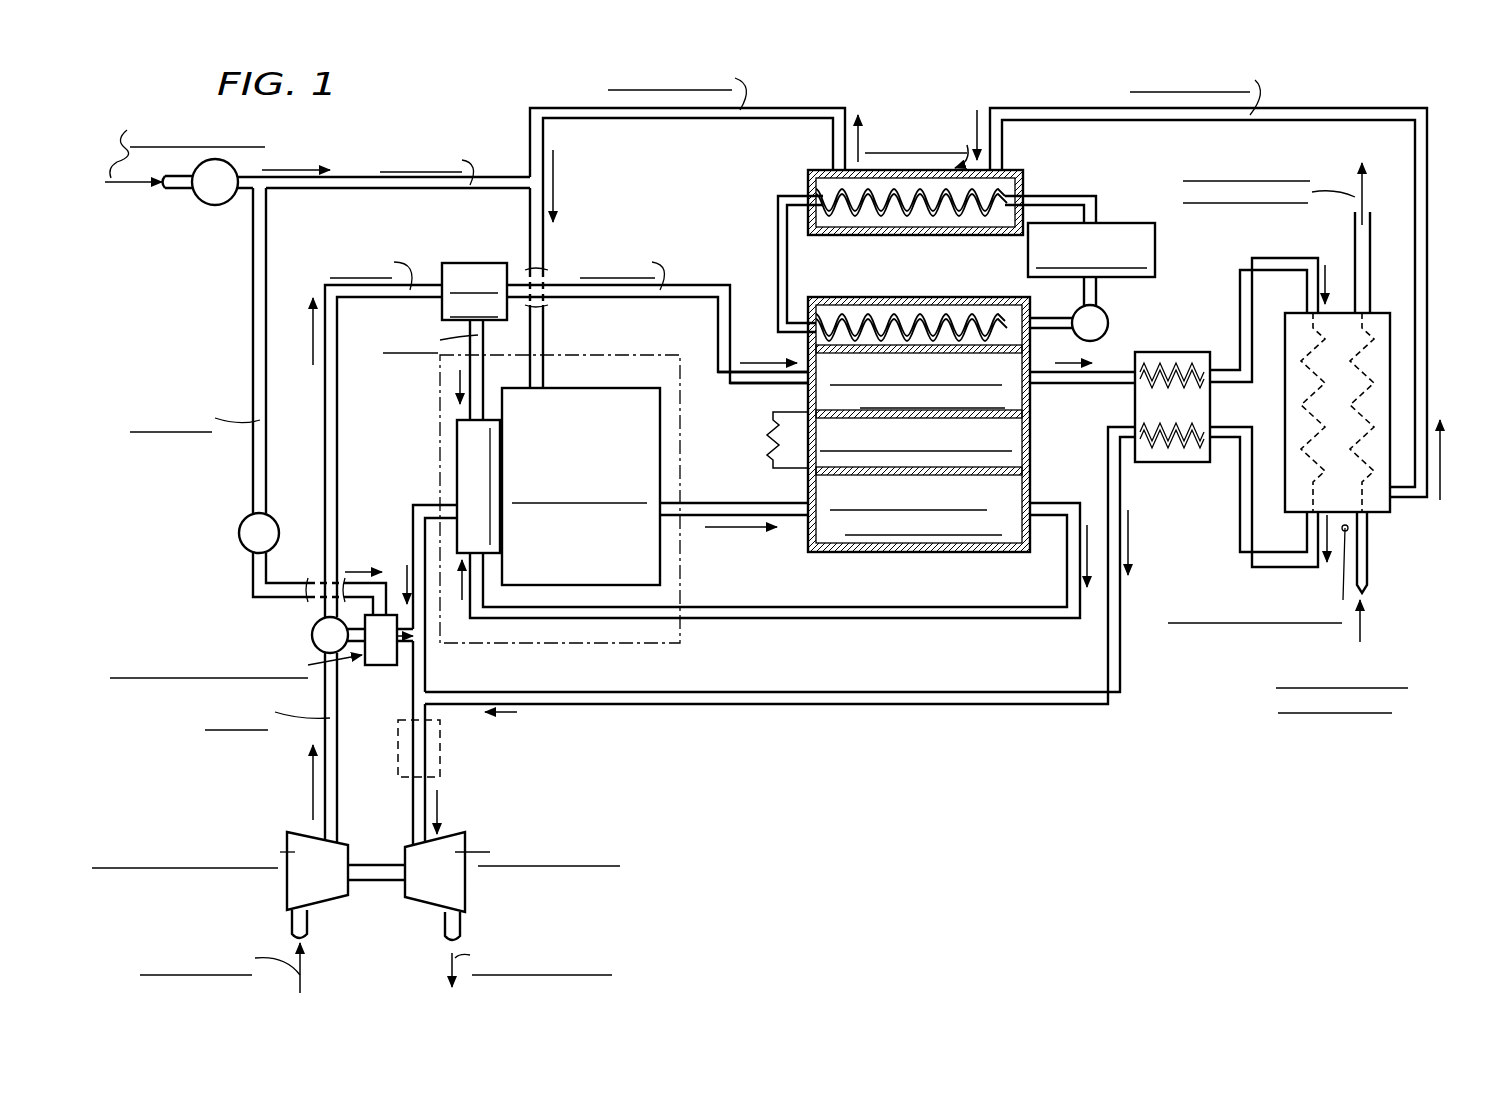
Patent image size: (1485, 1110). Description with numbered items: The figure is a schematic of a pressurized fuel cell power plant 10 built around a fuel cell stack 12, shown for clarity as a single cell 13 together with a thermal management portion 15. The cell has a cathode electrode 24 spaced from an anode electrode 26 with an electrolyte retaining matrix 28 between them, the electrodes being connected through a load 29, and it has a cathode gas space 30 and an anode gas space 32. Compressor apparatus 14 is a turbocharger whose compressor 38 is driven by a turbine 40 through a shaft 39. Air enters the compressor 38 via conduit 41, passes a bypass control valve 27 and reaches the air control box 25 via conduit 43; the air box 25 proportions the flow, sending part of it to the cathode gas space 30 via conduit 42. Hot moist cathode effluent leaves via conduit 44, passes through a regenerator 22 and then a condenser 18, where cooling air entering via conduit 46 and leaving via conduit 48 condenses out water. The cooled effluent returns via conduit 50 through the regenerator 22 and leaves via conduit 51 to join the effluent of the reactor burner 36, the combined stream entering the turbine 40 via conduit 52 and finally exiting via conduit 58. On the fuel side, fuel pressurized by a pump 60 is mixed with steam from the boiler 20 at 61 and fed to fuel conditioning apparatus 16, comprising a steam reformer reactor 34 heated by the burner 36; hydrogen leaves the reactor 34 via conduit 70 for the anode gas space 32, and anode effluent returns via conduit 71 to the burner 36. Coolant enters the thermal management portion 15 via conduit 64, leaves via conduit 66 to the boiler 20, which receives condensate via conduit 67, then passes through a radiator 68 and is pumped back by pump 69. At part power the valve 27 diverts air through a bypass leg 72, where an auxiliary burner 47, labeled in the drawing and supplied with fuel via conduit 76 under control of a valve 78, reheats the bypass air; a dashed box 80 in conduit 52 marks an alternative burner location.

The power plant 10 is at (493, 137).
The fuel cell stack 12 is at (899, 419).
The single cell 13 is at (805, 400).
The compressor apparatus 14 is at (483, 826).
The thermal management portion 15 is at (845, 310).
The fuel conditioning apparatus 16 is at (622, 352).
The condenser 18 is at (1287, 400).
The boiler 20 is at (825, 170).
The regenerator 22 is at (1170, 455).
The cathode electrode 24 is at (1030, 405).
The air control box 25 is at (497, 242).
The anode electrode 26 is at (1030, 462).
The bypass control valve 27 is at (312, 631).
The electrolyte retaining matrix 28 is at (1030, 424).
The load 29 is at (768, 450).
The cathode gas space 30 is at (919, 381).
The anode gas space 32 is at (919, 509).
The steam reformer reactor 34 is at (581, 486).
The reactor burner 36 is at (455, 437).
The compressor 38 is at (220, 871).
The shaft 39 is at (375, 865).
The turbine 40 is at (512, 872).
The conduit 41 is at (293, 925).
The conduit 42 is at (697, 293).
The conduit 43 is at (390, 290).
The conduit 44 is at (1116, 372).
The conduit 46 is at (1367, 570).
The auxiliary burner 47 is at (261, 660).
The conduit 48 is at (1355, 232).
The conduit 50 is at (1245, 522).
The conduit 51 is at (850, 685).
The conduit 52 is at (425, 712).
The conduit 58 is at (460, 925).
The pump 60 is at (210, 200).
The mixing point 61 is at (530, 183).
The conduit 64 is at (1040, 318).
The conduit 66 is at (775, 205).
The conduit 67 is at (1088, 85).
The radiator 68 is at (1118, 225).
The pump 69 is at (1110, 312).
The conduit 70 is at (713, 510).
The conduit 71 is at (776, 612).
The bypass leg 72 is at (385, 605).
The conduit 76 is at (262, 457).
The valve 78 is at (240, 530).
The box 80 is at (440, 762).